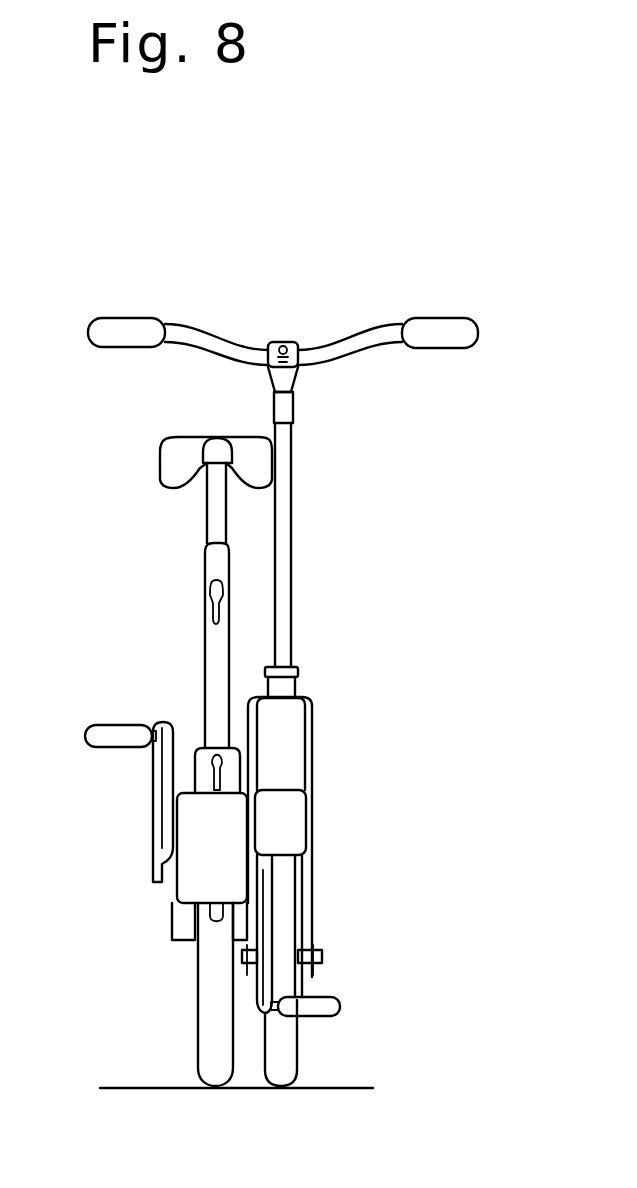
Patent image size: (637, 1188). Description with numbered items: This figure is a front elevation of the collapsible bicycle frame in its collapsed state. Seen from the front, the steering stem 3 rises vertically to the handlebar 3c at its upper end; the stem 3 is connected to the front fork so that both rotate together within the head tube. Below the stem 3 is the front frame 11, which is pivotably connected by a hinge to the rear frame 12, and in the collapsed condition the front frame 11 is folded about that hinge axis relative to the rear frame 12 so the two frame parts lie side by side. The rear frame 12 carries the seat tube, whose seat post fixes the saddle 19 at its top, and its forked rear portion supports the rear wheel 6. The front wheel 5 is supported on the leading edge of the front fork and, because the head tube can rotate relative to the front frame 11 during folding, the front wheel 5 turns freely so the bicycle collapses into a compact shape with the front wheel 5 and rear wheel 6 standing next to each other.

The handlebar 3c is at (343, 333).
The steering stem 3 is at (285, 530).
The saddle 19 is at (177, 455).
The front frame 11 is at (295, 770).
The rear frame 12 is at (202, 870).
The rear wheel 6 is at (207, 1025).
The front wheel 5 is at (287, 1048).